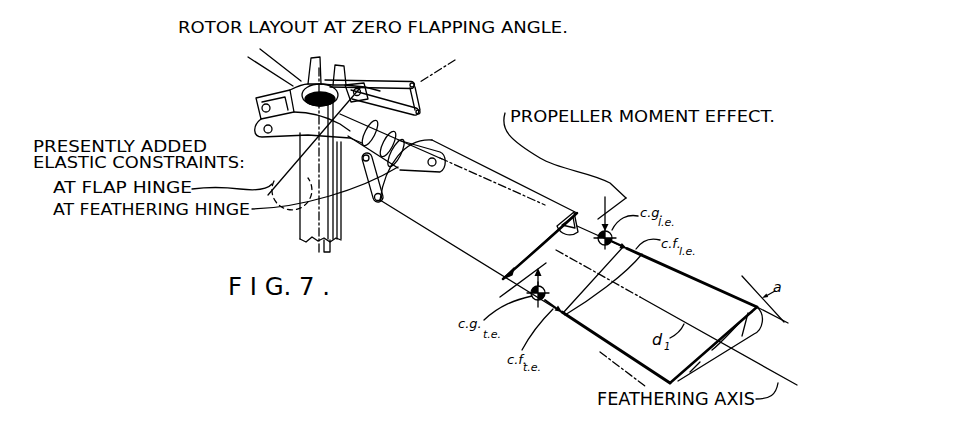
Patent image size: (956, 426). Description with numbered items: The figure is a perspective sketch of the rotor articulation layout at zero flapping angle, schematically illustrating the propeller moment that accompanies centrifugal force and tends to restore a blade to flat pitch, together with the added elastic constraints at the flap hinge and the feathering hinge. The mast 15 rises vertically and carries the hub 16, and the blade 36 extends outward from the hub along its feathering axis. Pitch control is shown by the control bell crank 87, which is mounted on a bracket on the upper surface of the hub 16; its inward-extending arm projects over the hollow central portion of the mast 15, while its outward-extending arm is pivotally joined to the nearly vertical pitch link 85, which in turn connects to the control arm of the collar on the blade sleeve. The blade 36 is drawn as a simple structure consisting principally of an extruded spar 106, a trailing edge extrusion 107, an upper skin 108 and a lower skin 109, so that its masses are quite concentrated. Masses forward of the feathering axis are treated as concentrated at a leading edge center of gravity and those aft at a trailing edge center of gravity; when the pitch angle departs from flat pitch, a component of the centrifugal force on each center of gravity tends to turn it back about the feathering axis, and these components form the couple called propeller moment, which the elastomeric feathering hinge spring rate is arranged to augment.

The mast 15 is at (336, 221).
The hub 16 is at (303, 118).
The blade 36 is at (485, 190).
The pitch link 85 is at (418, 92).
The control bell crank 87 is at (370, 76).
The extruded spar 106 is at (549, 205).
The trailing edge extrusion 107 is at (500, 278).
The upper skin 108 is at (500, 245).
The lower skin 109 is at (553, 257).